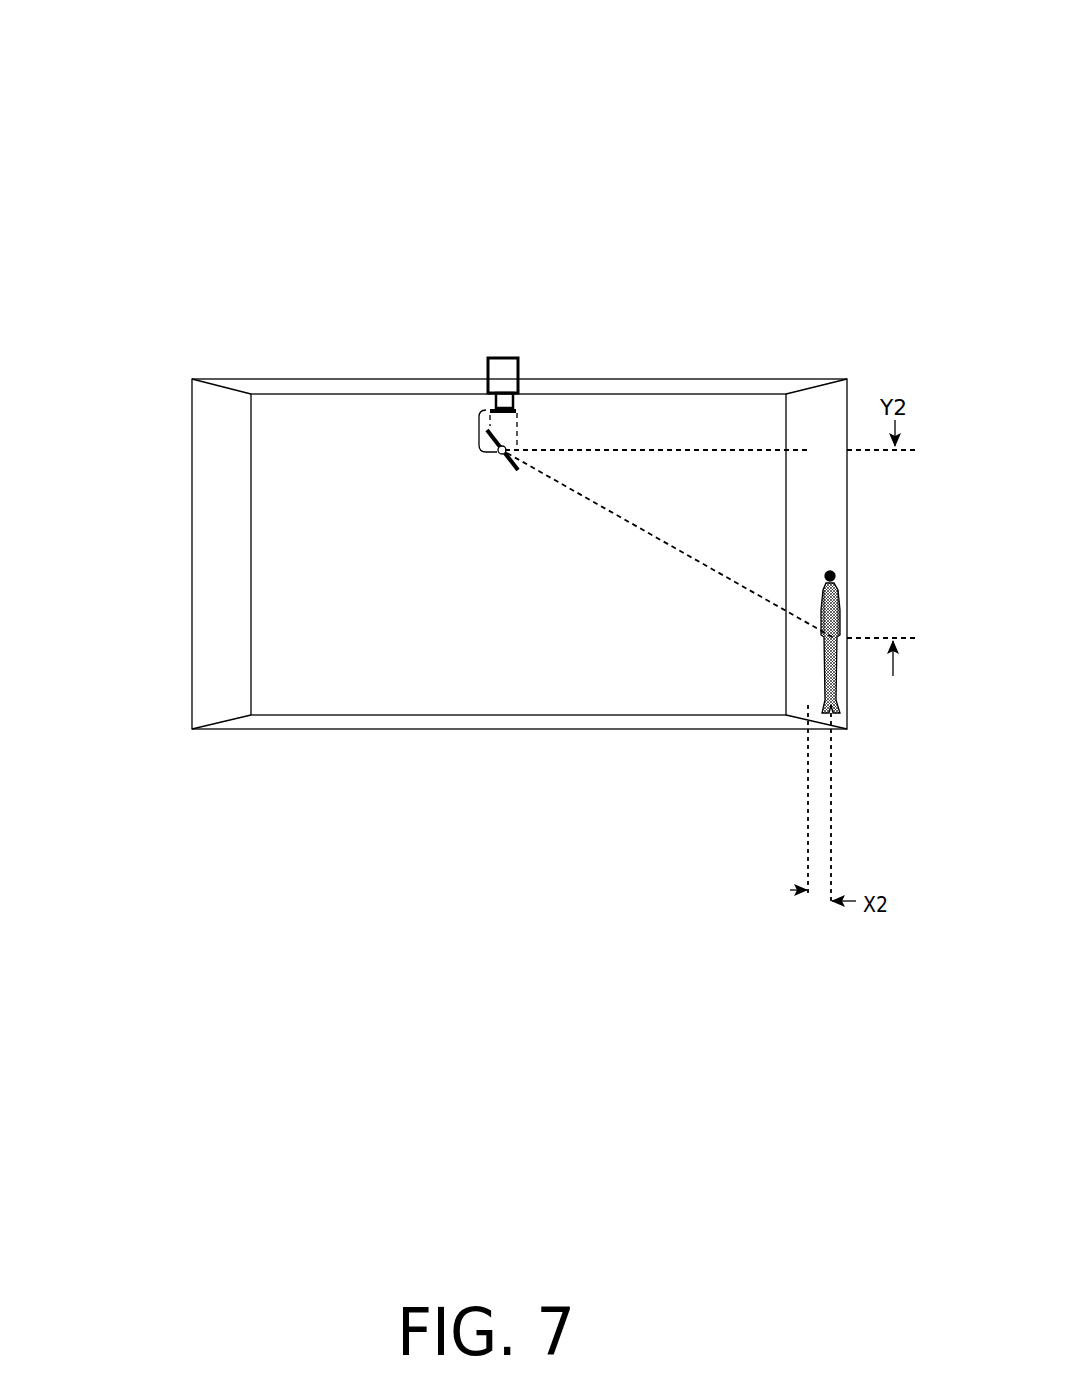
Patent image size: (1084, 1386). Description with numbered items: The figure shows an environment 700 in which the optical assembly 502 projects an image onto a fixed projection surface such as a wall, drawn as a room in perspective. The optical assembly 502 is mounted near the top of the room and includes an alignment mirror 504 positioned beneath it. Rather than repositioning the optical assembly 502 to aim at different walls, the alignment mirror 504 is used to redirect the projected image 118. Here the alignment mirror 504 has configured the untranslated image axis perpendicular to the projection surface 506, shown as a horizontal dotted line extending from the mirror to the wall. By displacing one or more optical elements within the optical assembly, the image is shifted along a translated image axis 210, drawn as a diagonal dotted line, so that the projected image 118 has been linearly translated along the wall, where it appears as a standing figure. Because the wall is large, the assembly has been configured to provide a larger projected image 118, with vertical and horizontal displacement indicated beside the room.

The environment 700 is at (801, 41).
The optical assembly 502 is at (505, 370).
The alignment mirror 504 is at (495, 458).
The untranslated image axis perpendicular to projection surface 506 is at (712, 448).
The translated image axis 210 is at (700, 563).
The projected image 118 is at (818, 664).